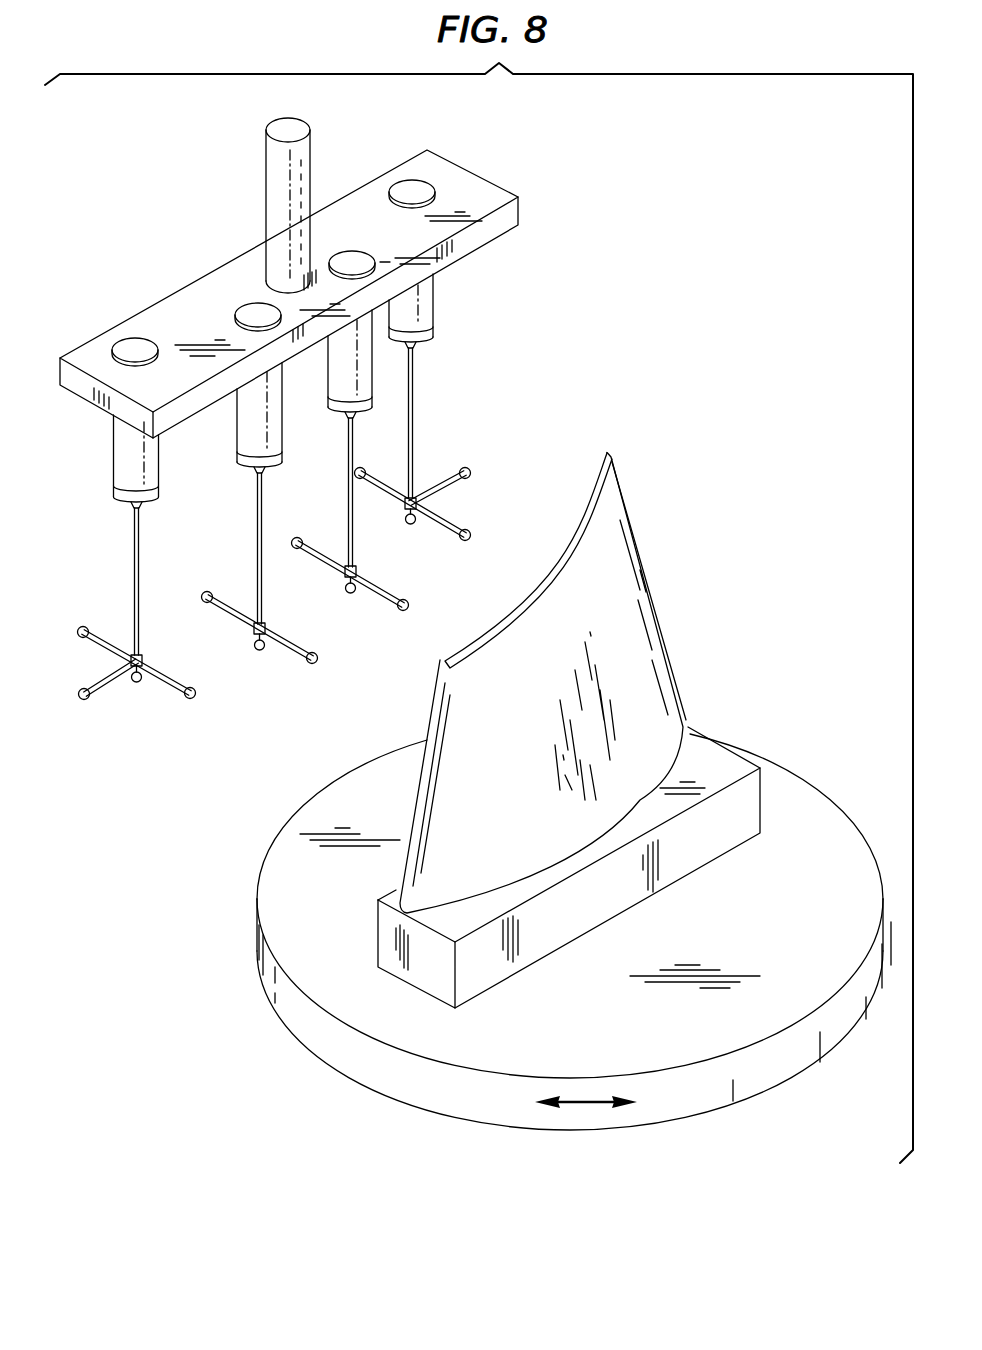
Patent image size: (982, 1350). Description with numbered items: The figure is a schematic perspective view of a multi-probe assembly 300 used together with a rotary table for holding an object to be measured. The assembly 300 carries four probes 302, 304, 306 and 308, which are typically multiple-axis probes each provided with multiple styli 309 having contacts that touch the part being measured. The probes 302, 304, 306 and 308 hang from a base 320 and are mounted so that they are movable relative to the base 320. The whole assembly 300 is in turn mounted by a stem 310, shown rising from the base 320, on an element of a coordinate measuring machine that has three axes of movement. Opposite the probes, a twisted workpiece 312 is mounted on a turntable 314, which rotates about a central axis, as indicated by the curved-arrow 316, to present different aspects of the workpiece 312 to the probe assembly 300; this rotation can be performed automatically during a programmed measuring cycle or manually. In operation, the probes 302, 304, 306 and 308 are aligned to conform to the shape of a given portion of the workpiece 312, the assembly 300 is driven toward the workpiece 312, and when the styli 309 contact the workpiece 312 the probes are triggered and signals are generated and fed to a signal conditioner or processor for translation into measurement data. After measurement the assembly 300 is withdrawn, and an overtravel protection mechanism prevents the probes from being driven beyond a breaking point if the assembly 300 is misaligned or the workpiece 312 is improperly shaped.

The multi-probe assembly 300 is at (542, 213).
The probe 302 is at (132, 550).
The probe 304 is at (253, 510).
The probe 306 is at (347, 508).
The probe 308 is at (417, 367).
The styli 309 is at (108, 638).
The stem 310 is at (267, 215).
The workpiece 312 is at (596, 475).
The turntable 314 is at (818, 818).
The curved-arrow 316 is at (580, 1106).
The base 320 is at (475, 172).